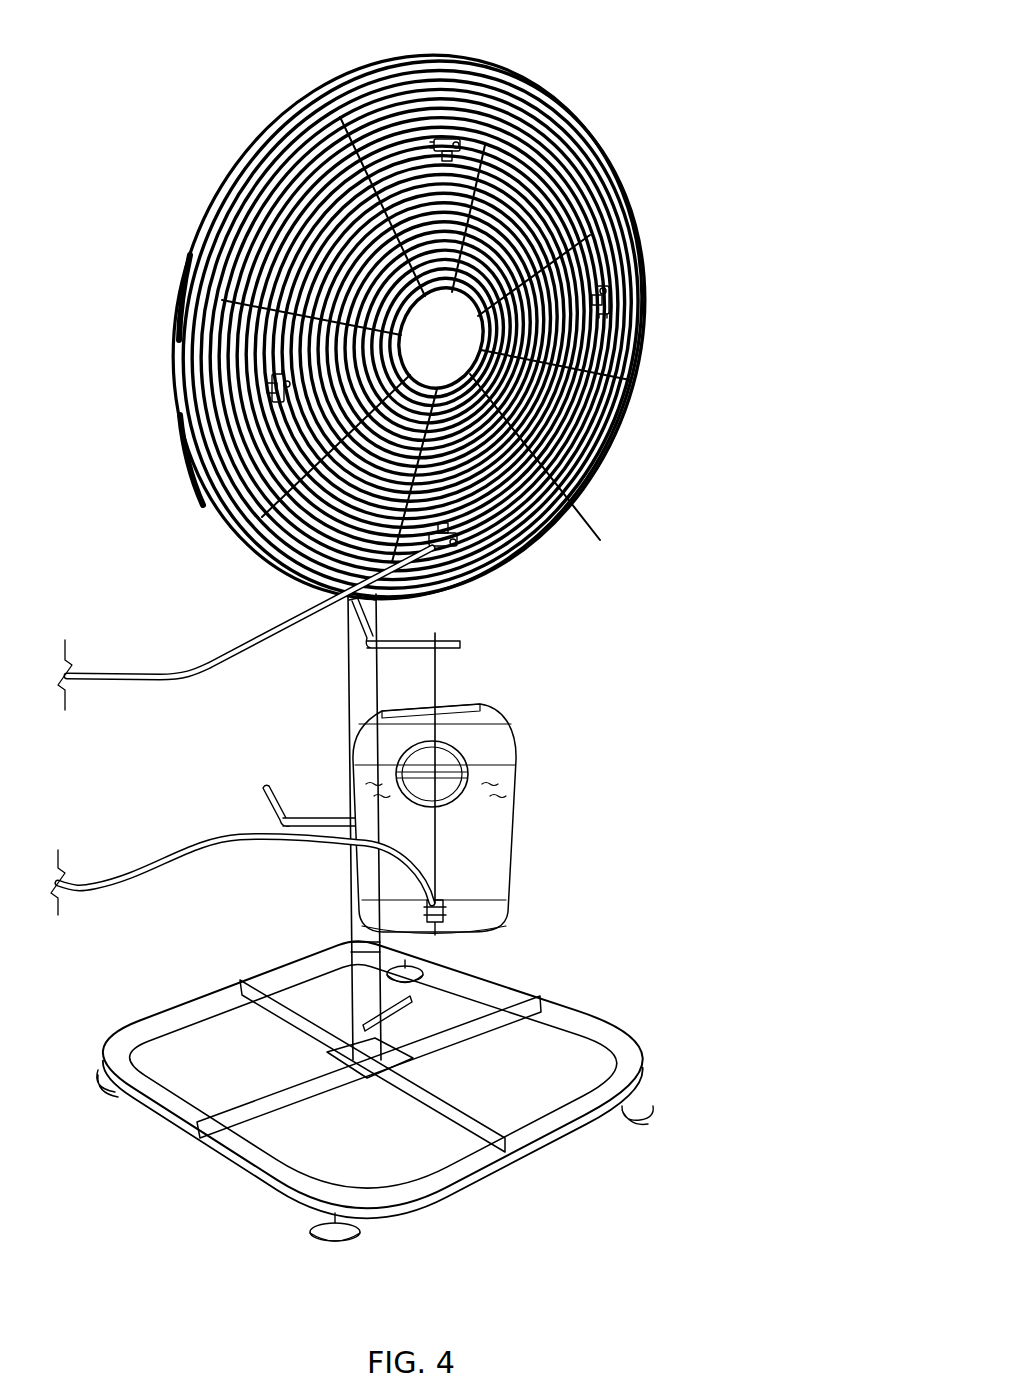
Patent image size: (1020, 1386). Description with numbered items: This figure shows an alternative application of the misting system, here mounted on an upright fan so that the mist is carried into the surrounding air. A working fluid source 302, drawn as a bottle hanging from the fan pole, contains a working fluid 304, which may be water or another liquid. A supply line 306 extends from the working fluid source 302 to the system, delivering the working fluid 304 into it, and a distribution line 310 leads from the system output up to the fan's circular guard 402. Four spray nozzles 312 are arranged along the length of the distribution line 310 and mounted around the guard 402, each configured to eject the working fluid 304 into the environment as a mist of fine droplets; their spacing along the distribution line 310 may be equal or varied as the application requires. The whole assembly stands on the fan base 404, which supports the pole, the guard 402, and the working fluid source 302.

The working fluid source 302 is at (514, 735).
The working fluid 304 is at (462, 845).
The supply line 306 is at (220, 837).
The distribution line 310 is at (200, 667).
The spray nozzle 312 is at (450, 135).
The fan guard 402 is at (620, 163).
The fan base 404 is at (577, 997).